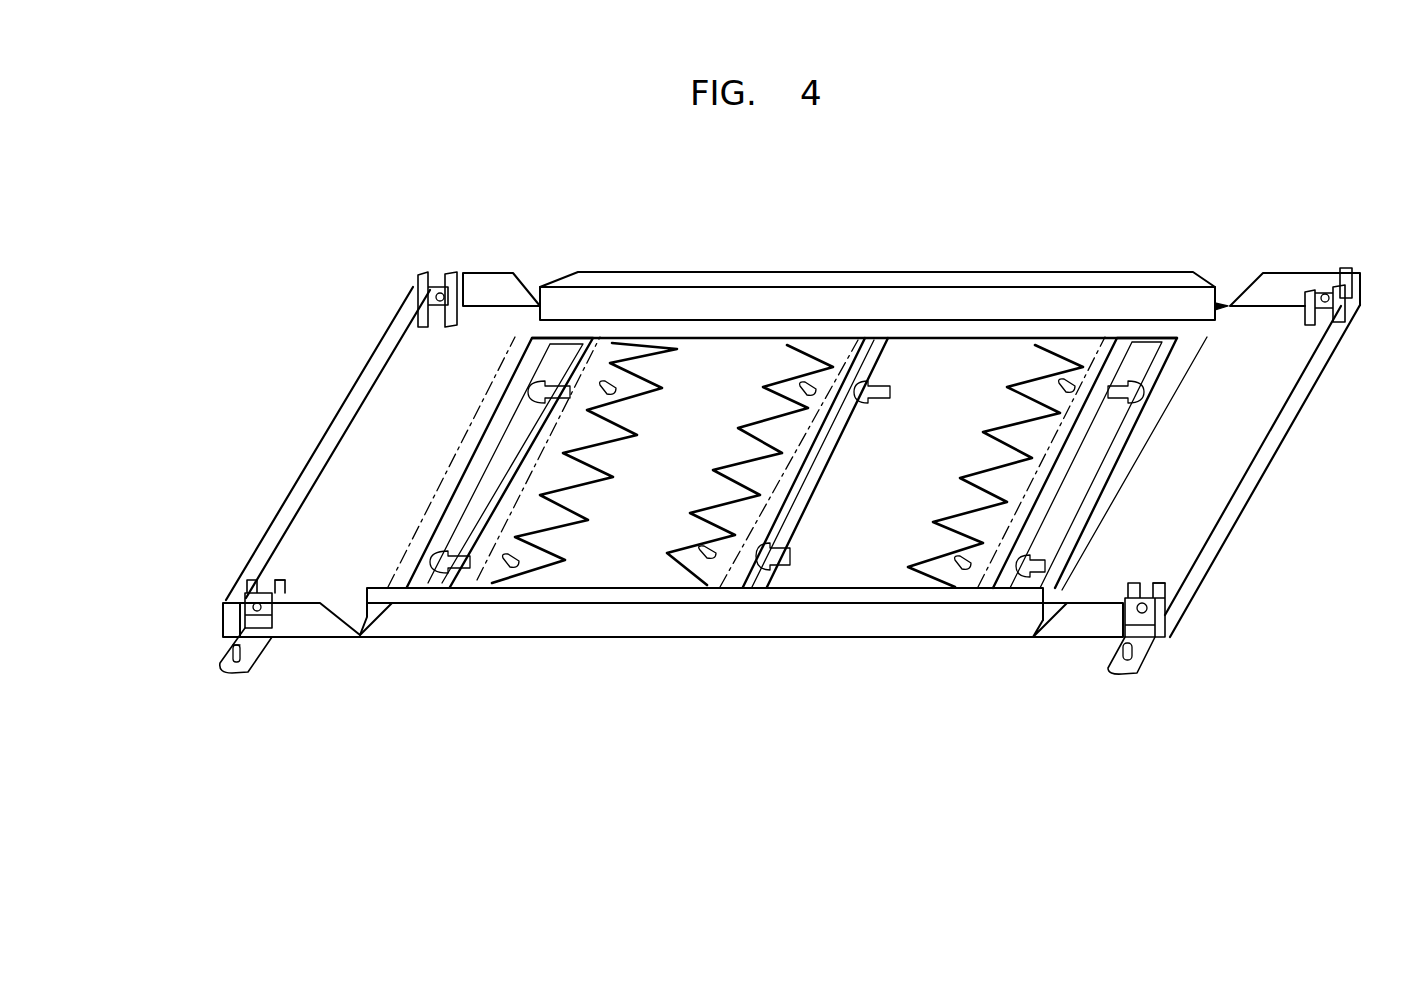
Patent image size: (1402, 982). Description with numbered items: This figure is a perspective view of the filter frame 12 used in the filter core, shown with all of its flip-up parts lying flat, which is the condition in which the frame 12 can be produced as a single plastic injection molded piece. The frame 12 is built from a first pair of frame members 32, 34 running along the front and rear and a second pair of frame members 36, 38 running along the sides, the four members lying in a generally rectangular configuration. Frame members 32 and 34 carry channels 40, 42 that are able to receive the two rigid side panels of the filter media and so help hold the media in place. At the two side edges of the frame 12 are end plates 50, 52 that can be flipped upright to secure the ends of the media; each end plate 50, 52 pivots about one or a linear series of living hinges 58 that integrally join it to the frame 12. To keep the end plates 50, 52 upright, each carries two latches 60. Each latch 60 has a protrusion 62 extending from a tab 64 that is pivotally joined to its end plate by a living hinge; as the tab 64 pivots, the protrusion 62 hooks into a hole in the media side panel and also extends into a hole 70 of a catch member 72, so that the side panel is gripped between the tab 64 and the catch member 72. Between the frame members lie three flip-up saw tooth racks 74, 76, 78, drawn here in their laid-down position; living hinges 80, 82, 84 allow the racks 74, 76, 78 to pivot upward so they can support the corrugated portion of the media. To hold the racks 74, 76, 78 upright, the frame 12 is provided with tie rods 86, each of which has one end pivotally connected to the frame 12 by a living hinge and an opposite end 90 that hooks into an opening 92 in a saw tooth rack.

The frame 12 is at (1093, 263).
The frame member 32 is at (770, 640).
The frame member 34 is at (836, 272).
The frame member 36 is at (463, 487).
The frame member 38 is at (1096, 474).
The channel 40 is at (575, 590).
The channel 42 is at (908, 280).
The end plate 50 is at (373, 433).
The end plate 52 is at (1187, 530).
The living hinge 58 is at (478, 430).
The latch 60 is at (442, 262).
The protrusion 62 is at (268, 652).
The tab 64 is at (228, 672).
The hole 70 is at (415, 292).
The catch member 72 is at (460, 317).
The saw tooth rack 74 is at (613, 420).
The saw tooth rack 76 is at (730, 470).
The saw tooth rack 78 is at (985, 425).
The living hinge 80 is at (520, 470).
The living hinge 82 is at (795, 470).
The living hinge 84 is at (1070, 430).
The tie rod 86 is at (885, 393).
The end 90 is at (790, 552).
The opening 92 is at (723, 562).